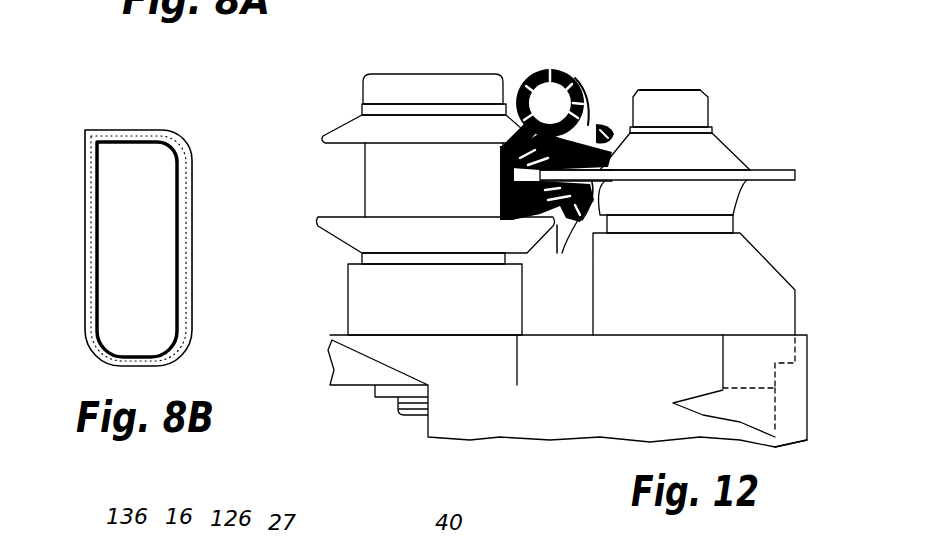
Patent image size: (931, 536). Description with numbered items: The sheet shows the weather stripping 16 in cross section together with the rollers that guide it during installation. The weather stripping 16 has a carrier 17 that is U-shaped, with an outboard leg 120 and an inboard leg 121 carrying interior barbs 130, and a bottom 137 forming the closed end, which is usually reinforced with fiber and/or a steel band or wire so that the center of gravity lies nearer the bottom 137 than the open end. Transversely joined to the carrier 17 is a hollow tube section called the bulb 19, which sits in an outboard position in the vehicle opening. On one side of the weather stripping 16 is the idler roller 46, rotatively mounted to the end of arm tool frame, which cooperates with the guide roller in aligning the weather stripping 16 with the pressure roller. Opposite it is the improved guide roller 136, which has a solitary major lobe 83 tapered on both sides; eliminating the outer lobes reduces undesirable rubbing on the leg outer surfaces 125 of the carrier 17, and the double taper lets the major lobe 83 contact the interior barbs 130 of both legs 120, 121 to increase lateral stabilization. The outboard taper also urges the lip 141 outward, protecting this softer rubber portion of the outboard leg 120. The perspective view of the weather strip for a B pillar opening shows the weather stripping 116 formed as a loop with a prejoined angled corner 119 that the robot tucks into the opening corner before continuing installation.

In FIG. 8B, the tubular member 116 is at (182, 130).
In FIG. 8B, the angled corner 119 is at (96, 132).
In FIG. 12, the idler roller 46 is at (410, 92).
In FIG. 12, the interior barbs 130 is at (528, 142).
In FIG. 12, the weather stripping 16 is at (558, 74).
In FIG. 12, the bulb 19 is at (578, 78).
In FIG. 12, the leg outer surfaces 125 is at (600, 122).
In FIG. 12, the outboard leg 120 is at (605, 136).
In FIG. 12, the lip 141 is at (637, 102).
In FIG. 12, the guide roller 136 is at (698, 110).
In FIG. 12, the major lobe 83 is at (775, 172).
In FIG. 12, the carrier 17 is at (500, 162).
In FIG. 12, the bottom 137 is at (505, 190).
In FIG. 12, the inboard leg 121 is at (561, 222).